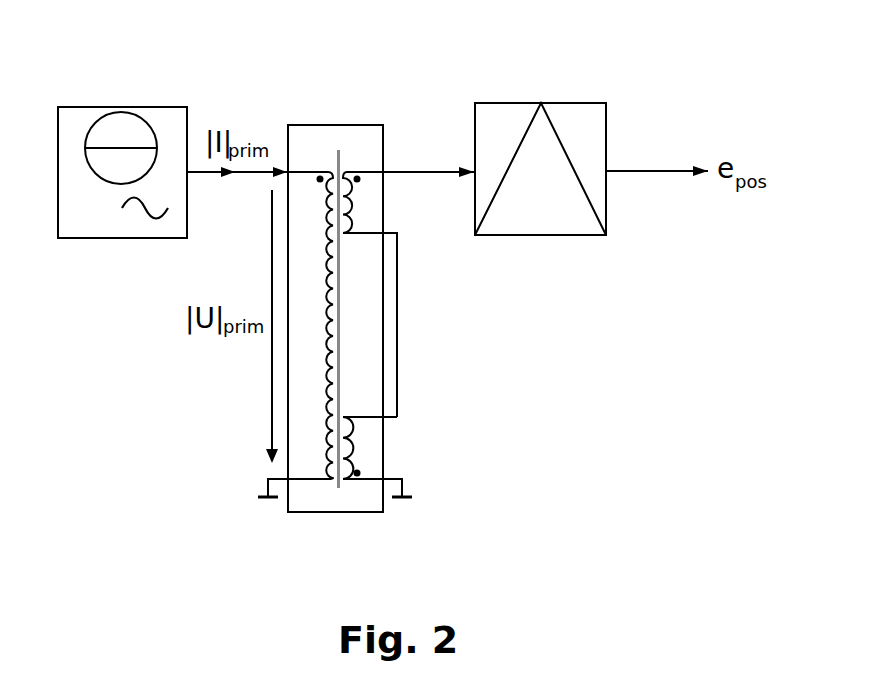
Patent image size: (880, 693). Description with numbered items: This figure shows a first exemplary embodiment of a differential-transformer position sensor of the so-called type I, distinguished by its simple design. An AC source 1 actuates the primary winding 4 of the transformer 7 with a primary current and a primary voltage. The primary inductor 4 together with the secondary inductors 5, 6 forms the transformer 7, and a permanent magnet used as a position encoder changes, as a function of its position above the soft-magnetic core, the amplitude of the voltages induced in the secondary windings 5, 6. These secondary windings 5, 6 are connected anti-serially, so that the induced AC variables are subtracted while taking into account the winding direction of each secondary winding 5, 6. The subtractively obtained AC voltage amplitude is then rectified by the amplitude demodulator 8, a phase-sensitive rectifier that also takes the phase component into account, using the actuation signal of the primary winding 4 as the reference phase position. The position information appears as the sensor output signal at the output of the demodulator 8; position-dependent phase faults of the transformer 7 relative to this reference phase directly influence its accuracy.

The generator 1 is at (85, 240).
The primary inductor 4 is at (328, 232).
The secondary inductor 5 is at (355, 198).
The secondary inductor 6 is at (355, 445).
The transformer 7 is at (339, 349).
The amplitude demodulator 8 is at (588, 128).